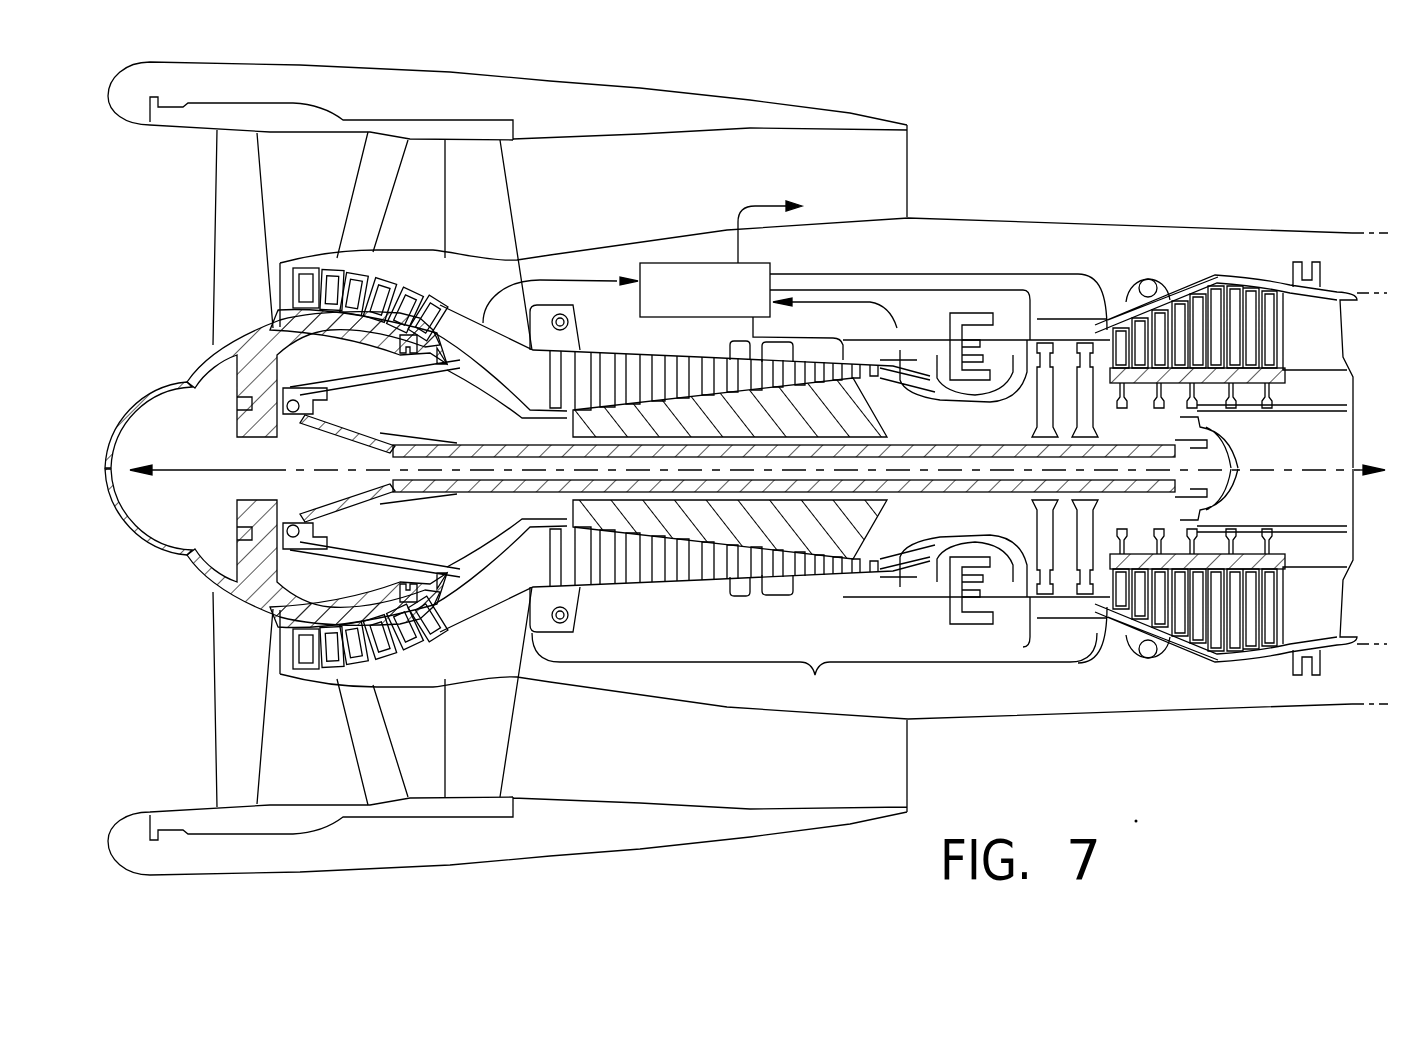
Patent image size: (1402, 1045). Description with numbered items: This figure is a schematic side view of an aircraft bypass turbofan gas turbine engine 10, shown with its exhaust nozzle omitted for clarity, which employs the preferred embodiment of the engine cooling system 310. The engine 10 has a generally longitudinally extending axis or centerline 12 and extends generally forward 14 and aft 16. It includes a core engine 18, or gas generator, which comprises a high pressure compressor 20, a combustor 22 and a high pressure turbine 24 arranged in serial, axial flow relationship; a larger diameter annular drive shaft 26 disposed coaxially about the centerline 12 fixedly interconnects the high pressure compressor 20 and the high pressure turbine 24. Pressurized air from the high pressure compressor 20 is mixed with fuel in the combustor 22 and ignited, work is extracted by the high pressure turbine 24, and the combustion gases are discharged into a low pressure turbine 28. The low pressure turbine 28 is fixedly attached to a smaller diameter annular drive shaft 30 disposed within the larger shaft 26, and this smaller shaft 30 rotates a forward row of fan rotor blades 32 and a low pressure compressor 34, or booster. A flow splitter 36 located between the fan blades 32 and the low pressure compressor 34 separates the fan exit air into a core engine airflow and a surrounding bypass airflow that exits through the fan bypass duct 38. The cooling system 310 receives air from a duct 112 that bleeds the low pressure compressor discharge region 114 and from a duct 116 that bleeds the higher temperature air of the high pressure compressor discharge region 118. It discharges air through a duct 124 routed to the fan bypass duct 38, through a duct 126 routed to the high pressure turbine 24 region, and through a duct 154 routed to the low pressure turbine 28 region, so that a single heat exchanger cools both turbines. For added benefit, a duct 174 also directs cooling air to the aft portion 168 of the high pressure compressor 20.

The aircraft bypass turbofan gas turbine engine 10 is at (985, 128).
The centerline 12 is at (273, 467).
The forward direction 14 is at (158, 467).
The aft direction 16 is at (1337, 467).
The core engine 18 is at (825, 675).
The high pressure compressor 20 is at (685, 568).
The combustor 22 is at (983, 590).
The high pressure turbine 24 is at (1065, 592).
The larger diameter annular drive shaft 26 is at (933, 523).
The low pressure turbine 28 is at (1193, 635).
The smaller diameter annular drive shaft 30 is at (470, 495).
The fan rotor blades 32 is at (250, 778).
The low pressure compressor 34 is at (381, 658).
The flow splitter 36 is at (290, 677).
The fan bypass duct 38 is at (737, 180).
The duct 112 is at (588, 300).
The low pressure compressor discharge region 114 is at (453, 300).
The duct 116 is at (897, 312).
The high pressure compressor discharge region 118 is at (900, 373).
The duct 124 is at (735, 260).
The duct 126 is at (933, 288).
The duct 154 is at (897, 272).
The aft portion of the high pressure compressor 168 is at (830, 572).
The duct 174 is at (810, 340).
The engine cooling system 310 is at (717, 303).